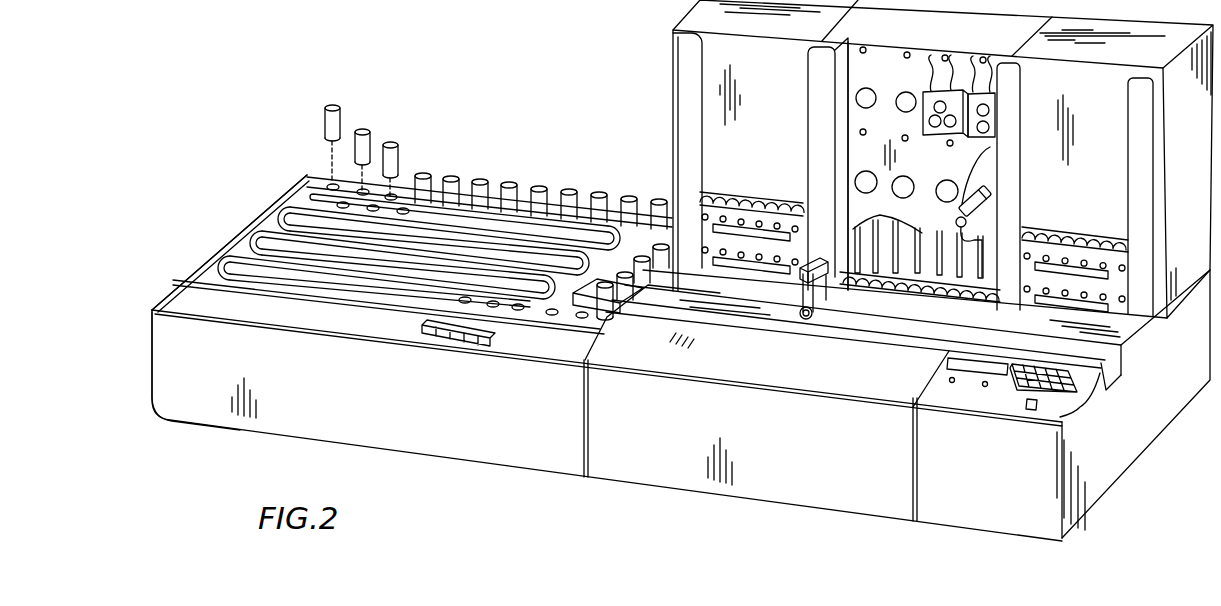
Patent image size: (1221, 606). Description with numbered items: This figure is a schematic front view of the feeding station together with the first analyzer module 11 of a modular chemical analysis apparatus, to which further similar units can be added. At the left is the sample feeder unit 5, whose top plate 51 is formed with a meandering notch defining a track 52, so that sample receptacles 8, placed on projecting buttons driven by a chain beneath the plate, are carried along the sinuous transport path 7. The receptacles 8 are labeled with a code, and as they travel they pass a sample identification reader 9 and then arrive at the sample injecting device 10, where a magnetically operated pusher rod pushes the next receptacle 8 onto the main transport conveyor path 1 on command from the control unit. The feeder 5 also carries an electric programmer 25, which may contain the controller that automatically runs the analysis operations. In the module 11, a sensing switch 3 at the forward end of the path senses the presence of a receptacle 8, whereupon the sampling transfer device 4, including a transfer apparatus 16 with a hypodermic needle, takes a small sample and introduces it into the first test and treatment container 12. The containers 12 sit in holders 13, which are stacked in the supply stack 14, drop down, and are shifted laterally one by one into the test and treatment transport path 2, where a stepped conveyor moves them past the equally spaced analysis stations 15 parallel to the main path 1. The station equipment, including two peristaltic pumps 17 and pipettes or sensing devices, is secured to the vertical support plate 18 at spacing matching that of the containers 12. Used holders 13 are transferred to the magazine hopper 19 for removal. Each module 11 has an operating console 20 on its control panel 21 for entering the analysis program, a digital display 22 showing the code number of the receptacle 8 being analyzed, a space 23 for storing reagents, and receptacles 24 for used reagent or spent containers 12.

The main transport conveyor path 1 is at (1117, 368).
The test and treatment transport path 2 is at (992, 295).
The sensing switch 3 is at (803, 297).
The sampling transfer device 4 is at (830, 280).
The sample feeder unit 5 is at (240, 233).
The transport path 7 is at (318, 185).
The sample receptacles 8 is at (389, 142).
The sample identification reader 9 is at (607, 277).
The sample injecting device 10 is at (580, 307).
The analyzer module 11 is at (1110, 472).
The test and treatment containers 12 is at (763, 193).
The holder 13 is at (727, 192).
The supply stack 14 is at (677, 172).
The analysis stations 15 is at (883, 226).
The transfer apparatus 16 is at (807, 320).
The peristaltic pumps 17 is at (963, 143).
The vertical support plate 18 is at (883, 57).
The magazine hopper 19 is at (1132, 200).
The operating console 20 is at (1057, 380).
The control panel 21 is at (993, 400).
The digital display 22 is at (943, 363).
The space for storage of reagents 23 is at (606, 480).
The receptacles for used reagent 24 is at (873, 500).
The electric programmer 25 is at (202, 405).
The top plate 51 is at (202, 263).
The track 52 is at (290, 207).